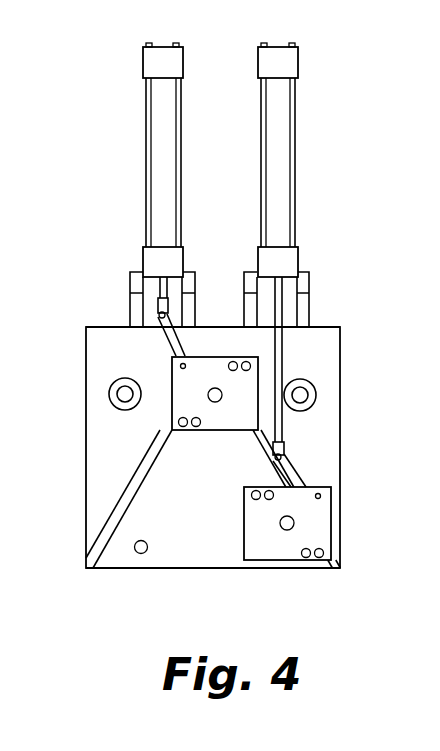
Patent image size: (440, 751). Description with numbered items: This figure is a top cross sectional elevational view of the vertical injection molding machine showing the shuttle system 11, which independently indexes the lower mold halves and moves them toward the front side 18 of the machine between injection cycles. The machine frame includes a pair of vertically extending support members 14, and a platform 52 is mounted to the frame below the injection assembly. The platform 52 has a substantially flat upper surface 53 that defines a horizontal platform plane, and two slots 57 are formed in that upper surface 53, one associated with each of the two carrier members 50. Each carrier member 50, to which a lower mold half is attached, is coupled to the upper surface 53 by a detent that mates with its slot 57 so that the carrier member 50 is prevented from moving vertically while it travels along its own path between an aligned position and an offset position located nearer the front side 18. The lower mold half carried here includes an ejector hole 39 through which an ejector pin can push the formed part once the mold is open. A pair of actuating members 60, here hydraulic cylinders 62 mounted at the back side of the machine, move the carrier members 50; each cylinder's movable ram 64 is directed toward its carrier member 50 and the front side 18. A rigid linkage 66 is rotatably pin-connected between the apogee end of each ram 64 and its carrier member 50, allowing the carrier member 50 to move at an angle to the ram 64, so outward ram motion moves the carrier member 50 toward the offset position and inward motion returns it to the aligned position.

The shuttle system 11 is at (367, 328).
The vertically extending support members 14 is at (108, 398).
The front side 18 is at (208, 570).
The ejector hole 39 is at (144, 554).
The carrier members 50 is at (170, 405).
The platform 52 is at (86, 363).
The upper surface 53 is at (111, 343).
The slots 57 is at (255, 443).
The actuating members 60 is at (345, 163).
The hydraulic cylinders 62 is at (257, 58).
The movable rams 64 is at (282, 347).
The rigid linkage 66 is at (303, 468).